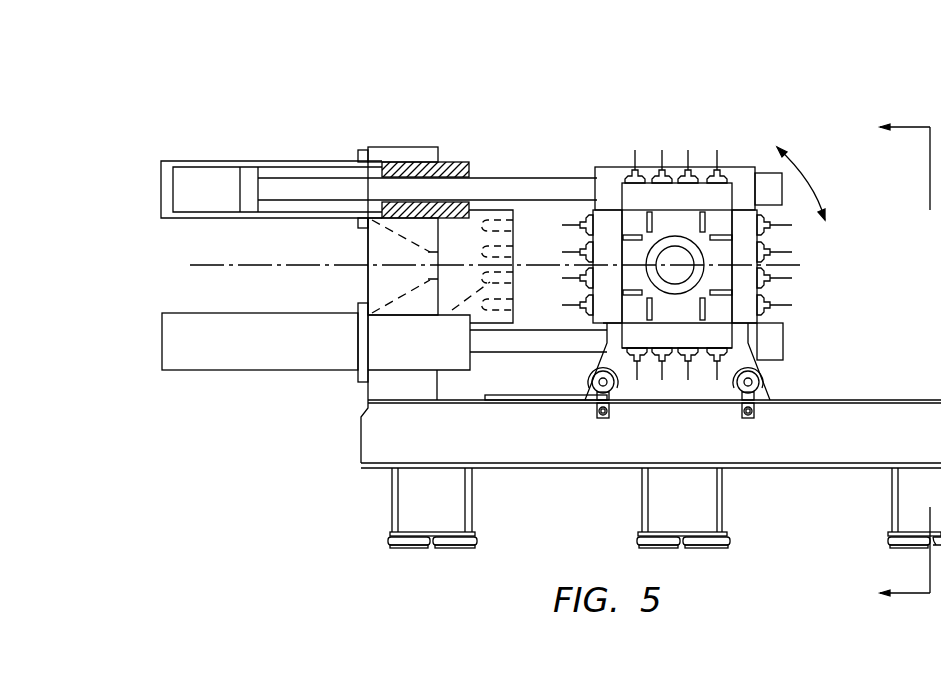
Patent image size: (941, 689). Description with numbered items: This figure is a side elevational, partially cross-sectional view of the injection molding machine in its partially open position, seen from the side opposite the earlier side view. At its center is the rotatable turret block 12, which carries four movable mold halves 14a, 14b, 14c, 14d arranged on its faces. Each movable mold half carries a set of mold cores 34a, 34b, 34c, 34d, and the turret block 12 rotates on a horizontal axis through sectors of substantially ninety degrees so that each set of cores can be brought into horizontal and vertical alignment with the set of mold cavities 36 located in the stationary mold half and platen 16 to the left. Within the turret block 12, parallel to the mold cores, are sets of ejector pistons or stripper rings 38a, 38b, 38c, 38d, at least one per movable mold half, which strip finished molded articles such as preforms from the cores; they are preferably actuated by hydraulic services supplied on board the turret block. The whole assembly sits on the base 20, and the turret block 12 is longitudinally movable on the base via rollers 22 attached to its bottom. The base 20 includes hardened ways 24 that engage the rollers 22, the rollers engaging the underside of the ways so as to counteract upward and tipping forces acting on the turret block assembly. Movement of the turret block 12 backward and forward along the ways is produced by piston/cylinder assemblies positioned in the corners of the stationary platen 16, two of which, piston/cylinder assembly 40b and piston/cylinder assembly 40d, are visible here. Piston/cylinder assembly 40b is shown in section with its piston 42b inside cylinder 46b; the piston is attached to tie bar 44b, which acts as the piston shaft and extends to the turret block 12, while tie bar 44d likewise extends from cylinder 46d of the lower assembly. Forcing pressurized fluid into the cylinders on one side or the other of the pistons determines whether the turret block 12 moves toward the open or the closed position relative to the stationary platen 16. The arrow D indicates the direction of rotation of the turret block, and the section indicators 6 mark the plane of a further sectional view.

The turret block 12 is at (755, 103).
The movable mold half 14a is at (603, 313).
The movable mold half 14b is at (627, 190).
The movable mold half 14c is at (750, 228).
The movable mold half 14d is at (702, 340).
The stationary mold half and platen 16 is at (490, 213).
The base 20 is at (787, 468).
The rollers 22 is at (604, 416).
The hardened ways 24 is at (535, 398).
The set of mold cores 34a is at (563, 252).
The set of mold cores 34b is at (663, 153).
The set of mold cores 34c is at (795, 290).
The set of mold cores 34d is at (688, 366).
The set of mold cavities 36 is at (452, 310).
The set of ejector pistons or stripper rings 38a is at (632, 293).
The set of ejector pistons or stripper rings 38b is at (703, 218).
The set of ejector pistons or stripper rings 38c is at (722, 296).
The set of ejector pistons or stripper rings 38d is at (705, 318).
The piston/cylinder assembly 40b is at (208, 163).
The piston/cylinder assembly 40d is at (262, 370).
The piston 42b is at (250, 180).
The tie bar 44b is at (512, 188).
The tie bar 44d is at (492, 347).
The cylinder 46b is at (190, 175).
The cylinder 46d is at (182, 358).
The section line 6- 6 is at (896, 361).
The direction of rotation D is at (803, 183).